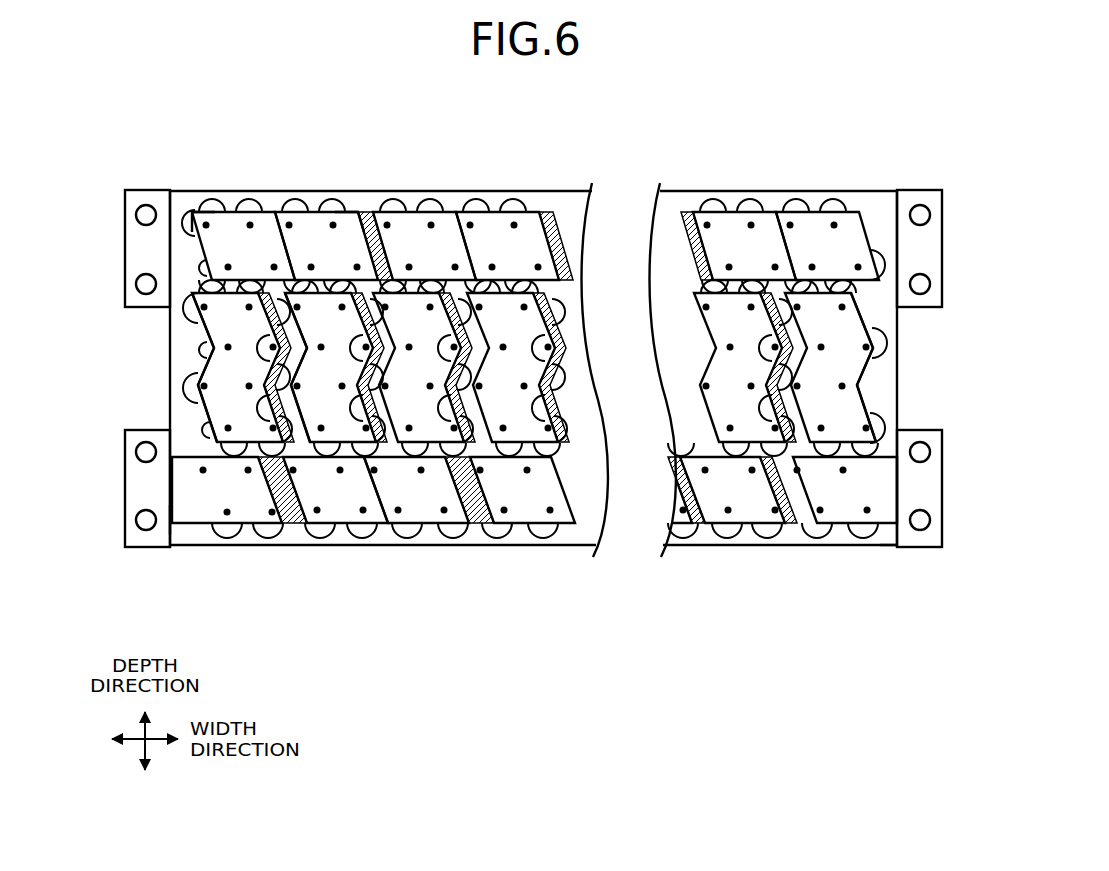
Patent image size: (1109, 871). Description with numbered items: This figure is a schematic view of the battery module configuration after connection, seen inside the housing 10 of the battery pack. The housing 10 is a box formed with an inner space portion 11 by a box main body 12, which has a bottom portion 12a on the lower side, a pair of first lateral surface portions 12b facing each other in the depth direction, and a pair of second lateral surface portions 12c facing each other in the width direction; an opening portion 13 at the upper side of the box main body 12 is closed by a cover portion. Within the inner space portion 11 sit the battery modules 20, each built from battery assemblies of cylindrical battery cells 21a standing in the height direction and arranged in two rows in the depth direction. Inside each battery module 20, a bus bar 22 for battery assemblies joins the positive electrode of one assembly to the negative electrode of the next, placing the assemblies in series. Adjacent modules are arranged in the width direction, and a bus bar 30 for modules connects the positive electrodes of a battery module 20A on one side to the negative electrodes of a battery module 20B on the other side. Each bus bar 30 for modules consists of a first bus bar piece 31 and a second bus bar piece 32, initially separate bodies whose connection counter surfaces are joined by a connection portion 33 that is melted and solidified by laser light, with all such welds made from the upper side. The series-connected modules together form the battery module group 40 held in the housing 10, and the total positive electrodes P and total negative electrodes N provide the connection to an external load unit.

The housing 10 is at (872, 552).
The inner space portion 11 is at (890, 385).
The box main body 12 is at (792, 546).
The bottom portion 12a is at (752, 546).
The first lateral surface portion 12b is at (814, 190).
The second lateral surface portion 12c is at (170, 318).
The opening portion 13 is at (525, 381).
The battery module 20 is at (203, 552).
The battery module on one side 20A is at (488, 454).
The battery module on the other side 20B is at (580, 454).
The battery cell 21a is at (196, 210).
The bus bar for battery assemblies 22 is at (222, 337).
The bus bar for modules 30 is at (207, 118).
The first bus bar piece 31 is at (230, 226).
The second bus bar piece 32 is at (308, 226).
The connection portion 33 is at (285, 208).
The battery module group 40 is at (132, 235).
The total negative electrode N is at (181, 513).
The total positive electrode P is at (895, 546).